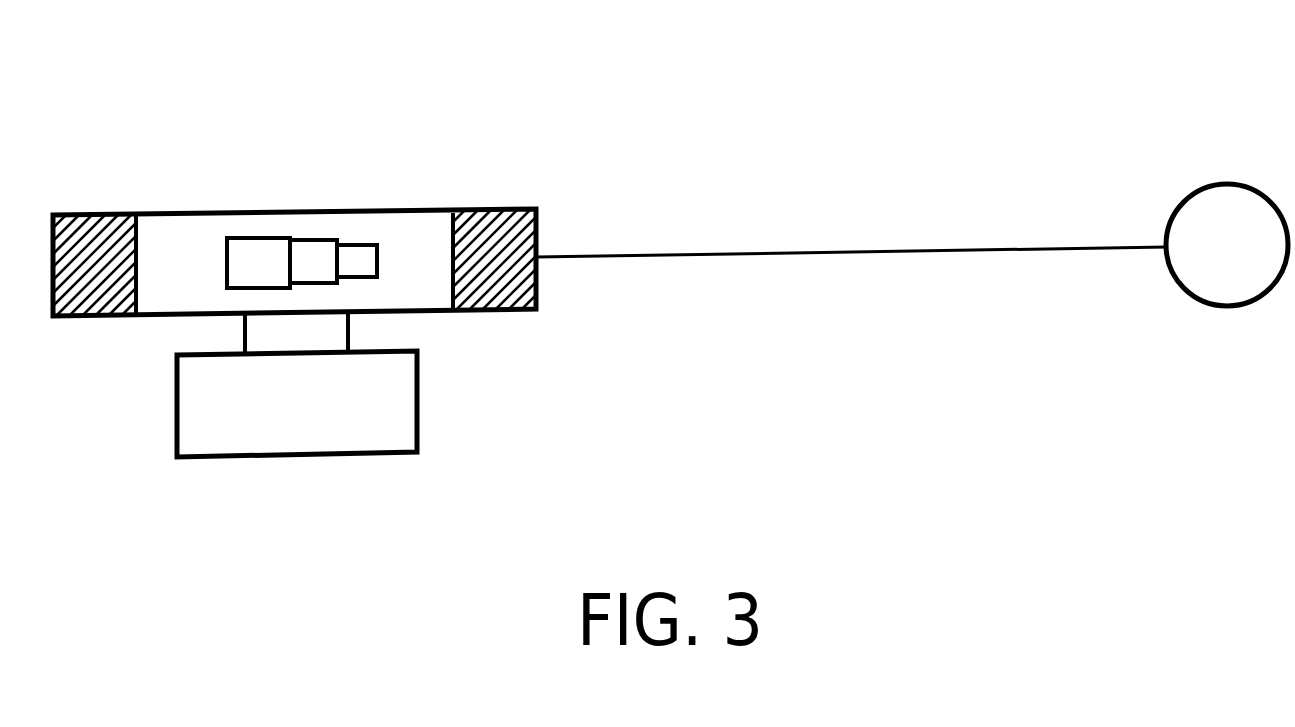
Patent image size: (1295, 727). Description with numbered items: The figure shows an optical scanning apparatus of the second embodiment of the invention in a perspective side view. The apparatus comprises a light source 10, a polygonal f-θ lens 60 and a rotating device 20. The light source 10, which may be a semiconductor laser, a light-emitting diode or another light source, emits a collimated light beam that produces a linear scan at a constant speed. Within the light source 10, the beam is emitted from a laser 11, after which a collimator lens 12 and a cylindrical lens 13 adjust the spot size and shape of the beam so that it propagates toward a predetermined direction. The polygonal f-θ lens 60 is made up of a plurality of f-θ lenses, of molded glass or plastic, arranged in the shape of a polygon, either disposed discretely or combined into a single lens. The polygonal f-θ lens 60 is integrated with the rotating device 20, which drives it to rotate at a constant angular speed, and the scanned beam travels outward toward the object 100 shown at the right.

The light source 10 is at (306, 150).
The laser 11 is at (268, 250).
The collimator lens 12 is at (313, 252).
The cylindrical lens 13 is at (370, 186).
The rotating device 20 is at (393, 403).
The polygonal f-θ lens 60 is at (495, 225).
The target object 100 is at (1228, 183).